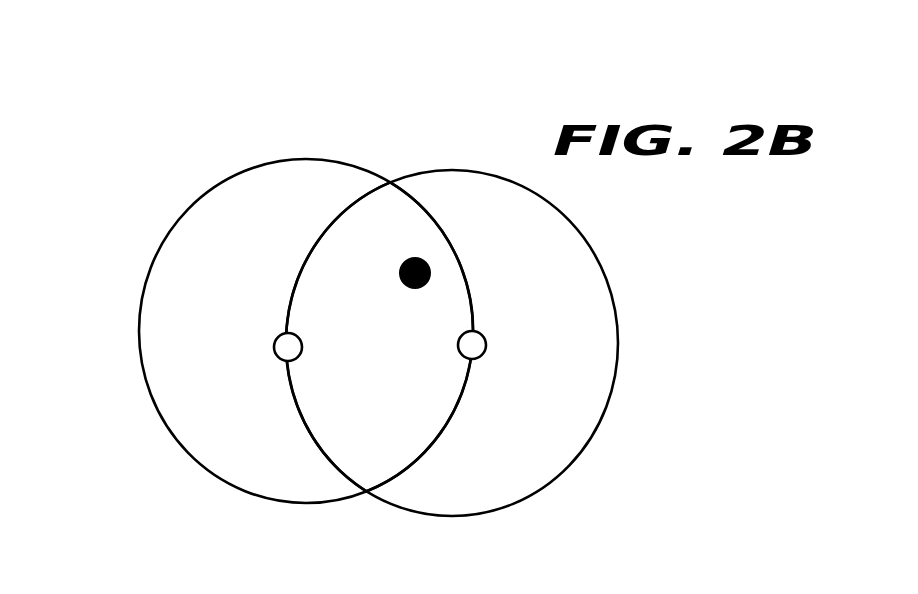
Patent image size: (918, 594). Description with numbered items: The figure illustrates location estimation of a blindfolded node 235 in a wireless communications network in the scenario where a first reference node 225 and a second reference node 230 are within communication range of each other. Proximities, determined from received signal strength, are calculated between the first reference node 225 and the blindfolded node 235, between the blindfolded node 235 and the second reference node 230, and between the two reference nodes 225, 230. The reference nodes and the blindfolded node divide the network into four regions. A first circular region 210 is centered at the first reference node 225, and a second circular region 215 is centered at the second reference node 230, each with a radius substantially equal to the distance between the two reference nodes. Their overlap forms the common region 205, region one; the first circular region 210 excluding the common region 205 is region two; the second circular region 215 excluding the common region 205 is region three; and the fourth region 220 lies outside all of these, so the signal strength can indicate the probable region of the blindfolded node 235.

The common region 205 is at (362, 452).
The first circular region 210 is at (157, 346).
The second circular region 215 is at (600, 347).
The fourth region 220 is at (378, 321).
The first reference node 225 is at (277, 337).
The second reference node 230 is at (487, 332).
The blindfolded node 235 is at (405, 262).